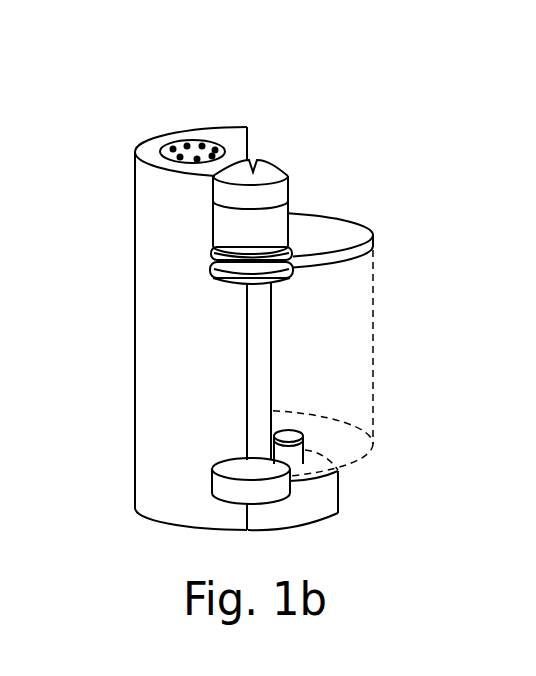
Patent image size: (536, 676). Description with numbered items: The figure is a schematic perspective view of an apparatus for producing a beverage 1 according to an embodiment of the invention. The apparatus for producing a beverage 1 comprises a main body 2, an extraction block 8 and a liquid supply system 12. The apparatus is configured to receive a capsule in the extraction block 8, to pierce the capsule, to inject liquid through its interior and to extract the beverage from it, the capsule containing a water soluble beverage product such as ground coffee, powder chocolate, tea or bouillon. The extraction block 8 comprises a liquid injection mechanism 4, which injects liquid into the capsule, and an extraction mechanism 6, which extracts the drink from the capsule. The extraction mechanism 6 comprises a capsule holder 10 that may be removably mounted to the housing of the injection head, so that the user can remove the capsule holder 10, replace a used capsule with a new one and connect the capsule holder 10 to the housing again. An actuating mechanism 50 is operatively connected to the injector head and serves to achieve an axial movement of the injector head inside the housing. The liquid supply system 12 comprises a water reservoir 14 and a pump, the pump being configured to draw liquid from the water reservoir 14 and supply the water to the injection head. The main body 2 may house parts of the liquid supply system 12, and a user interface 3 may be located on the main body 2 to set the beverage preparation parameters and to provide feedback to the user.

The apparatus for producing a beverage 1 is at (366, 111).
The main body 2 is at (149, 144).
The user interface 3 is at (195, 124).
The liquid injection mechanism 4 is at (317, 154).
The extraction mechanism 6 is at (309, 278).
The extraction block 8 is at (343, 257).
The capsule holder 10 is at (333, 371).
The liquid supply system 12 is at (111, 440).
The water reservoir 14 is at (347, 397).
The actuating mechanism 50 is at (257, 166).